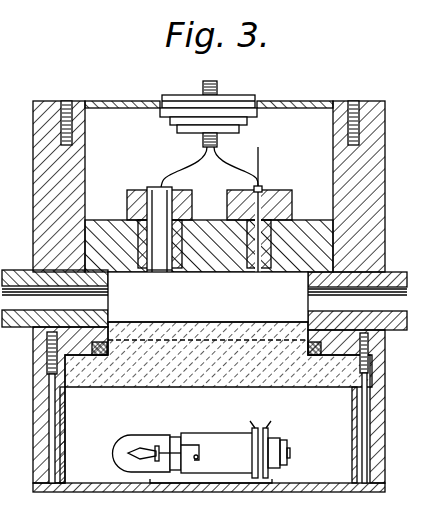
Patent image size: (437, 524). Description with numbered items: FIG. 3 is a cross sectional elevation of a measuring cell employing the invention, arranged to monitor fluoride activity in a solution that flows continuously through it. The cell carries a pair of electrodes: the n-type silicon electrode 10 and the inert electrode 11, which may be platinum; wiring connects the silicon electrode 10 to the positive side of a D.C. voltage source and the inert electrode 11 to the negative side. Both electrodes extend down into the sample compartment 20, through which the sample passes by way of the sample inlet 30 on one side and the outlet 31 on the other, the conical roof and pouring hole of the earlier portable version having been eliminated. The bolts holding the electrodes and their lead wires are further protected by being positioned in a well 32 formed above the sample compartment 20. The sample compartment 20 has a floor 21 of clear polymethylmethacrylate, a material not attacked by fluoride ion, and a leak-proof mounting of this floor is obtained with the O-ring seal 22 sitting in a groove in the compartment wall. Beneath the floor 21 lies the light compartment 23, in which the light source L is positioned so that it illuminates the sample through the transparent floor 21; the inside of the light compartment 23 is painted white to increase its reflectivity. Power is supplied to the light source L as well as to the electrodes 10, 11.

The n-type silicon electrode 10 is at (155, 276).
The inert electrode 11 is at (252, 278).
The sample compartment 20 is at (127, 290).
The floor 21 is at (322, 372).
The O-ring seal 22 is at (186, 357).
The light compartment 23 is at (100, 466).
The sample inlet 30 is at (14, 269).
The outlet 31 is at (383, 272).
The well 32 is at (97, 152).
The lamp L is at (143, 464).